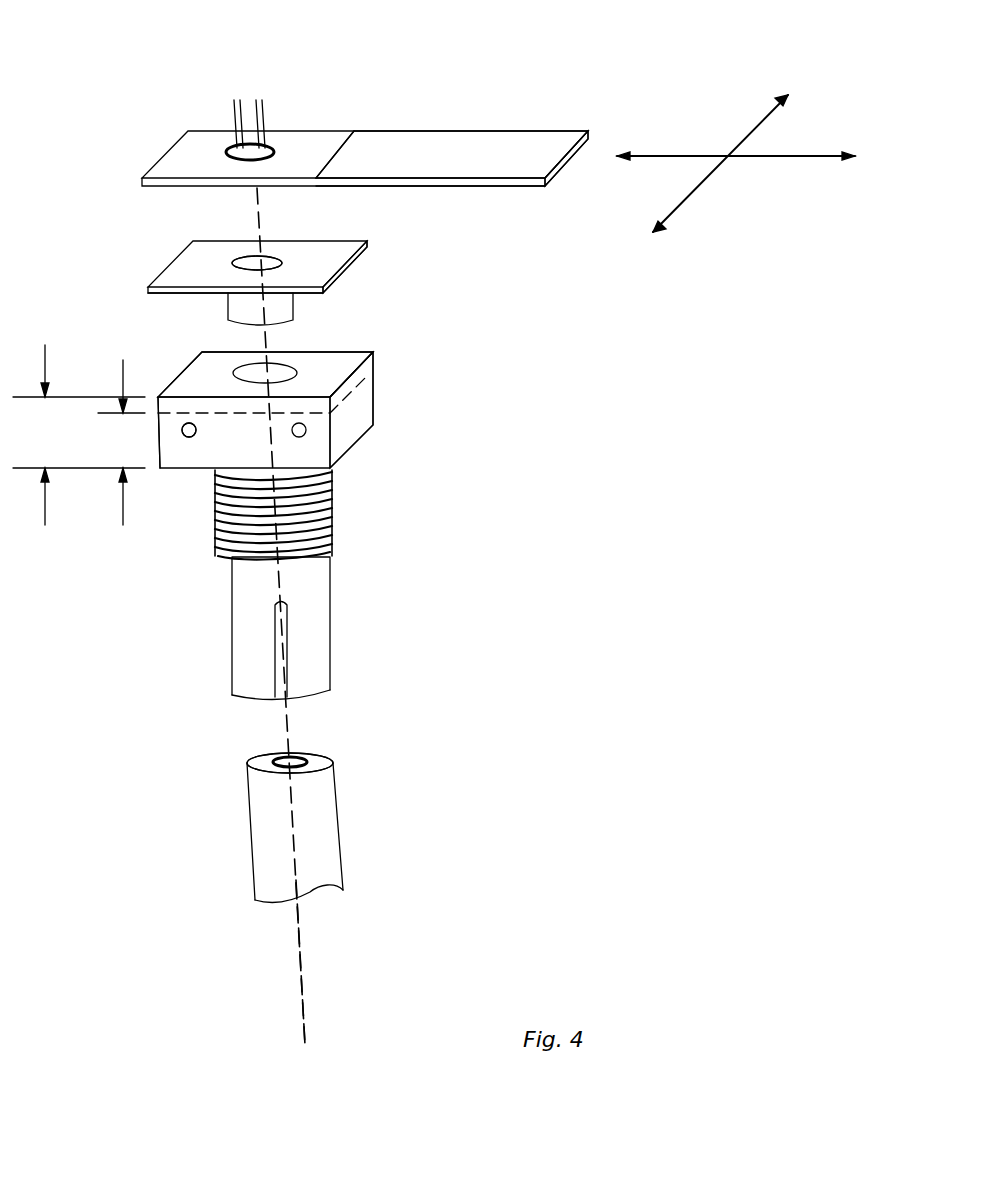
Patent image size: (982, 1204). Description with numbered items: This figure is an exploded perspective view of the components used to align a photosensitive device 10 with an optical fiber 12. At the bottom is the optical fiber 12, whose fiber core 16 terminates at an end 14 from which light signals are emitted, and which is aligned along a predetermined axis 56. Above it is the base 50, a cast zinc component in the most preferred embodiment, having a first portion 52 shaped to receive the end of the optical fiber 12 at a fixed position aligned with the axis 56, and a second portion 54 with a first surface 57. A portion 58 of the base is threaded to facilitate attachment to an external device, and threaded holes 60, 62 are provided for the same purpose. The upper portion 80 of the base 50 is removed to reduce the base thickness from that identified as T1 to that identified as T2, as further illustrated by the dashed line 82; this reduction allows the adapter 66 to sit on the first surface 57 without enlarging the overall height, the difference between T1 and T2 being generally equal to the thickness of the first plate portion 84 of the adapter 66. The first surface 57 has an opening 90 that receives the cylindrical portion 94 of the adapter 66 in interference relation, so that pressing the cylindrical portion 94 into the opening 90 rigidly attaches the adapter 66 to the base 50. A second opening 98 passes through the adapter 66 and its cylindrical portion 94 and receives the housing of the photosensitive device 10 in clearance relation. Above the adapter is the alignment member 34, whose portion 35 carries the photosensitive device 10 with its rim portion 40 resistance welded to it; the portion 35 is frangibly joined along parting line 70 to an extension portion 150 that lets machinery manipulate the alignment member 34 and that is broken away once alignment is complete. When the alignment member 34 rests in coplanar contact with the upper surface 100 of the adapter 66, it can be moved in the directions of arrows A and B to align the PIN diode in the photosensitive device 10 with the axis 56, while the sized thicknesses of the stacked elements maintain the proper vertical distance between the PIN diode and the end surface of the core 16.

The photosensitive device 10 is at (218, 142).
The optical fiber 12 is at (308, 845).
The end of the fiber core 14 is at (255, 762).
The fiber core 16 is at (300, 755).
The alignment member 34 is at (512, 178).
The portion of the alignment member 35 is at (190, 175).
The rim portion 40 is at (265, 148).
The base 50 is at (362, 430).
The first portion 52 is at (308, 665).
The second portion 54 is at (170, 425).
The predetermined axis 56 is at (304, 975).
The first surface 57 is at (372, 372).
The threaded portion 58 is at (332, 532).
The threaded hole 60 is at (189, 437).
The threaded hole 62 is at (306, 432).
The adapter 66 is at (365, 243).
The parting line 70 is at (352, 136).
The upper portion 80 is at (378, 356).
The dashed line 82 is at (370, 397).
The first plate portion 84 is at (152, 290).
The opening 90 is at (283, 365).
The cylindrical portion 94 is at (280, 313).
The second opening 98 is at (245, 260).
The upper surface 100 is at (185, 280).
The extension portion 150 is at (448, 163).
The arrow A is at (768, 156).
The arrow B is at (755, 128).
The thickness T1 is at (79, 435).
The thickness T2 is at (121, 442).